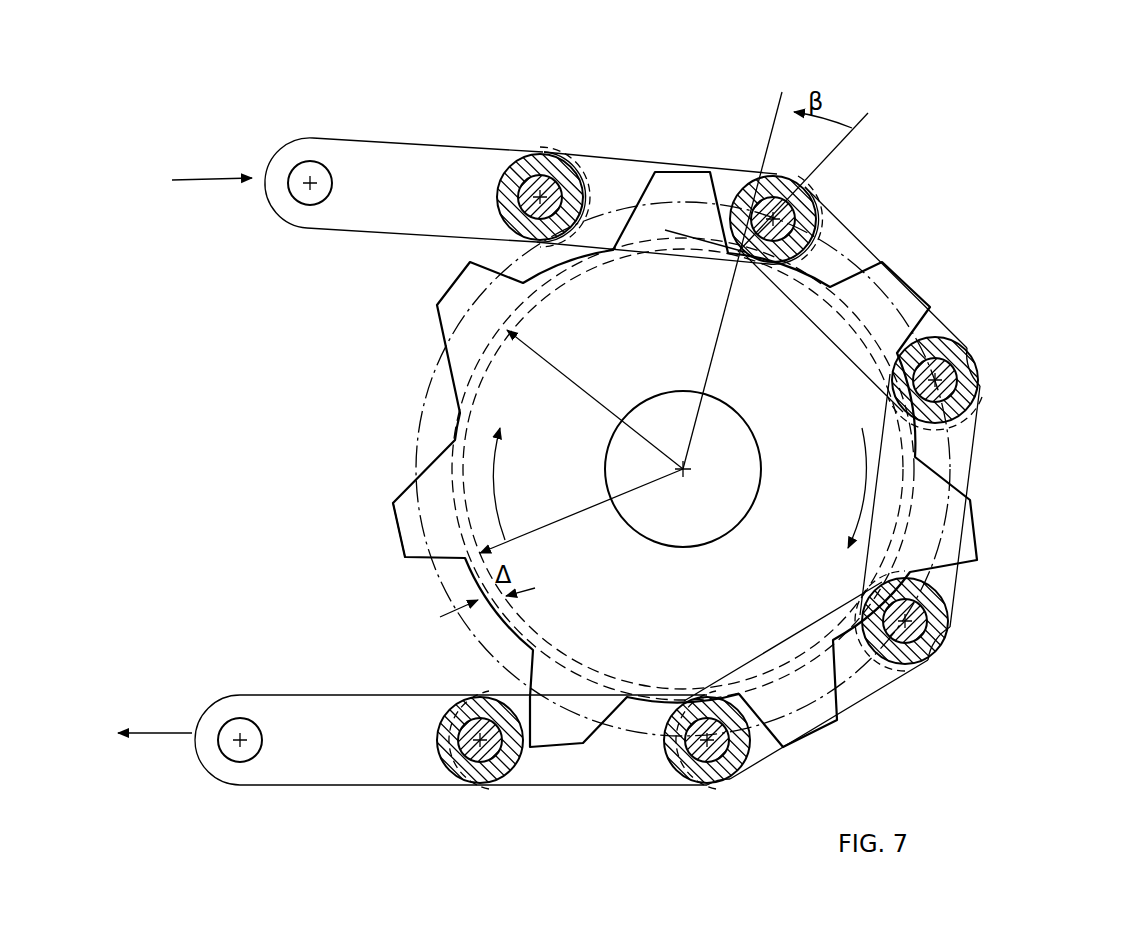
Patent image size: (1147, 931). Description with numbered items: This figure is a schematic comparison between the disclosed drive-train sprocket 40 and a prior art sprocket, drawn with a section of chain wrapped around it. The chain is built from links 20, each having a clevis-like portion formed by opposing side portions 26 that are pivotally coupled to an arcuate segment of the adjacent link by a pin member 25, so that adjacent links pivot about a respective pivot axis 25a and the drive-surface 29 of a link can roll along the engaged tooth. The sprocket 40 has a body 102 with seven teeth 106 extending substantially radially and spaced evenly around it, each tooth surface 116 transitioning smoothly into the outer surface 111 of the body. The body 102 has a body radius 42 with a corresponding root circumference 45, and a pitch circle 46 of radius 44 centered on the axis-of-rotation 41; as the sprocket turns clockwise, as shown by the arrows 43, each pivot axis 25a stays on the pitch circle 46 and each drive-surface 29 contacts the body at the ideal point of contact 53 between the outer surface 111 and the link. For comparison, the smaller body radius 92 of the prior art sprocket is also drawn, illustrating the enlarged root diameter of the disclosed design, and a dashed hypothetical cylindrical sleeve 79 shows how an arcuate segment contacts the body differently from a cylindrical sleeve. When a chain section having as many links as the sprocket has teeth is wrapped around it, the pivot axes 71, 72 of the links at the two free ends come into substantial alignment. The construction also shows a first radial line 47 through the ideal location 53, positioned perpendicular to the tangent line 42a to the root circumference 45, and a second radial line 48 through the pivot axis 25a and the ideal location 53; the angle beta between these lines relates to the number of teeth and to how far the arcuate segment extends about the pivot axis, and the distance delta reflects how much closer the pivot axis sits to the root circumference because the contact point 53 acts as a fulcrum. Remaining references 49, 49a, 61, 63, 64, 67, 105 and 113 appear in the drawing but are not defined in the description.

The link 20 is at (445, 115).
The pin member 25 is at (323, 228).
The pivot axis 25a is at (776, 210).
The opposing side portions 26 is at (388, 148).
The drive-surface 29 is at (270, 192).
The sprocket 40 is at (380, 543).
The axis-of-rotation 41 is at (690, 462).
The body radius 42 is at (478, 322).
The tangent line 42a is at (685, 236).
The arrows 43 is at (505, 478).
The pitch circle radius 44 is at (440, 395).
The root circumference 45 is at (523, 300).
The pitch circle 46 is at (418, 420).
The first radial line 47 is at (775, 110).
The second radial line 48 is at (858, 138).
The chain entry direction 49 is at (205, 172).
The chain exit direction 49a is at (160, 748).
The ideal point of contact 53 is at (740, 258).
The root surface 61 is at (527, 302).
The roller contact point 63 is at (745, 262).
The engaging flank 64 is at (800, 238).
The flank surface 67 is at (828, 283).
The pivot axis 71 is at (310, 168).
The pivot axis 72 is at (235, 722).
The hypothetical cylindrical sleeve 79 is at (588, 185).
The body radius 92 is at (463, 558).
The body 102 is at (612, 591).
The central bore 105 is at (757, 482).
The teeth 106 is at (398, 504).
The outer surface 111 is at (455, 436).
The tooth tip 113 is at (398, 520).
The tooth surface 116 is at (395, 498).